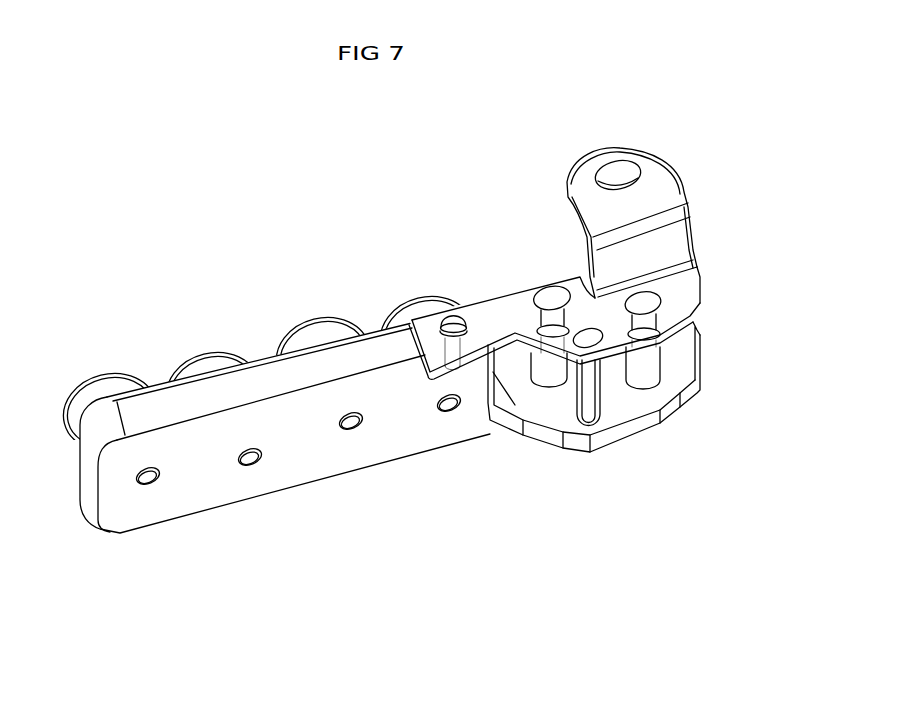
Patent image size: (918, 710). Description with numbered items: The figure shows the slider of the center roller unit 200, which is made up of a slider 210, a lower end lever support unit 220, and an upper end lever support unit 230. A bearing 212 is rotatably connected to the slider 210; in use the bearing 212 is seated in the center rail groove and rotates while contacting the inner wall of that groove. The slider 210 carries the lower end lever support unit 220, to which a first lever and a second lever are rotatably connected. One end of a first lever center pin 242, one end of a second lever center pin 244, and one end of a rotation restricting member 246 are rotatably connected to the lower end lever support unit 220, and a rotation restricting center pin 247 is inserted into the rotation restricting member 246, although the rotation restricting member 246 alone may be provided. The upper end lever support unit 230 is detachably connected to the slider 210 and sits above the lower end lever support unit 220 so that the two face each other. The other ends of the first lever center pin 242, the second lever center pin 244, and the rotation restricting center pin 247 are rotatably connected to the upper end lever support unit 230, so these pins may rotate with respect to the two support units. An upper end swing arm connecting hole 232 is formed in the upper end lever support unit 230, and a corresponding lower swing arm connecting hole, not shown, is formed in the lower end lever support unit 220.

The center roller unit 200 is at (346, 506).
The slider 210 is at (188, 492).
The bearing 212 is at (120, 388).
The lower end lever support unit 220 is at (553, 442).
The upper end lever support unit 230 is at (487, 310).
The upper end swing arm connecting hole 232 is at (613, 178).
The first lever center pin 242 is at (541, 377).
The second lever center pin 244 is at (690, 396).
The rotation restricting member 246 is at (597, 402).
The rotation restricting center pin 247 is at (593, 339).